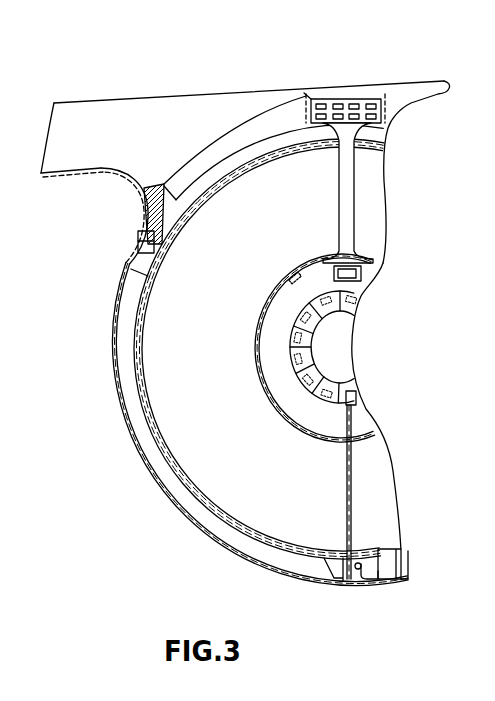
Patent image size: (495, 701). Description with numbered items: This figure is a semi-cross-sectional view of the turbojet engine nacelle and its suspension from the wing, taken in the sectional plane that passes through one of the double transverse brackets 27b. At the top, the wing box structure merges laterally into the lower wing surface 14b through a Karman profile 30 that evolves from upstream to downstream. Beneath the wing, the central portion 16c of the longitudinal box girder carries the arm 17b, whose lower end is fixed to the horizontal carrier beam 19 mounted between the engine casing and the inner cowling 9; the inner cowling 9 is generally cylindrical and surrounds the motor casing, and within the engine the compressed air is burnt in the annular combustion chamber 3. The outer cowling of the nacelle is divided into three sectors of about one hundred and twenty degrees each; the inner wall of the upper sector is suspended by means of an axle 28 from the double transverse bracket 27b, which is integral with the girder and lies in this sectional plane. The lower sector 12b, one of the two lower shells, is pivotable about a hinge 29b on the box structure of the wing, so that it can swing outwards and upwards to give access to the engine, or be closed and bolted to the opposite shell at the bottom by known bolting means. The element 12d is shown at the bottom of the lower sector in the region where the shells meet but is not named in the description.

The annular combustion chamber 3 is at (292, 330).
The inner cowling 9 is at (256, 353).
The lower sector of the outer cowling 12b is at (192, 500).
The retaining bracket 12d is at (352, 570).
The lower wing surface 14b is at (87, 170).
The central portion of the girder 16c is at (340, 97).
The arm 17b is at (343, 222).
The horizontal carrier beam 19 is at (360, 277).
The double transverse bracket 27b is at (223, 153).
The axle 28 is at (187, 207).
The hinge 29b is at (137, 250).
The Karman profile 30 is at (130, 182).